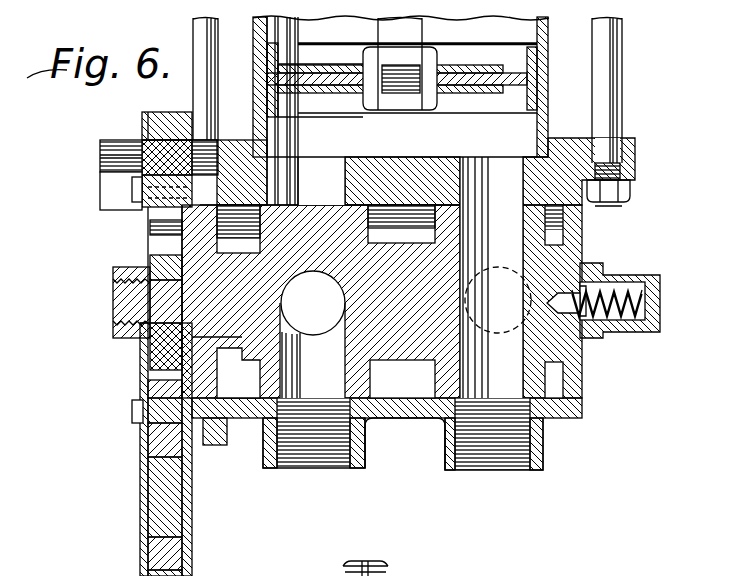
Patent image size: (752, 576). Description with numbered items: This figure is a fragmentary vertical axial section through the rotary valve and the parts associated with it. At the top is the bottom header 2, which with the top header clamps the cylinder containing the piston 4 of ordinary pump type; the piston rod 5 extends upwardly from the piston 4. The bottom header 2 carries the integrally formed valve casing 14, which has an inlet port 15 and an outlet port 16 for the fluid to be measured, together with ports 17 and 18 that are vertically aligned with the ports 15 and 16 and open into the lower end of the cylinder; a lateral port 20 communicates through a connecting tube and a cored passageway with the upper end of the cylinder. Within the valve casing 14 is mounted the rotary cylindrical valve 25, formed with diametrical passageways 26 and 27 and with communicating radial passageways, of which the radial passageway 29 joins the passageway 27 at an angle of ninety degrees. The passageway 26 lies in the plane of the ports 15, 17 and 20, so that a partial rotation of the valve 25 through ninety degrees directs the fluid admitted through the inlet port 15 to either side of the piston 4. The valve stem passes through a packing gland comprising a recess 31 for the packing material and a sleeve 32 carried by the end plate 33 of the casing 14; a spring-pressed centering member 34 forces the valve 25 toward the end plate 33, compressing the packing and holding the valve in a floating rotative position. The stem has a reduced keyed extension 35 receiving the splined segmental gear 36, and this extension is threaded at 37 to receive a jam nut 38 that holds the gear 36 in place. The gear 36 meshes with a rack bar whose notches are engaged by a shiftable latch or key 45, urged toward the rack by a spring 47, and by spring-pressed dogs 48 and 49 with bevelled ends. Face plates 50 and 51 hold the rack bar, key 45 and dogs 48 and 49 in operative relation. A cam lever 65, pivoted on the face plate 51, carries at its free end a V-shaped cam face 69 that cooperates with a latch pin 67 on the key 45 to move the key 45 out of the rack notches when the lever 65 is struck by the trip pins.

The bottom header 2 is at (362, 168).
The piston 4 is at (453, 93).
The piston rod 5 is at (426, 44).
The valve casing 14 is at (592, 412).
The inlet port 15 is at (543, 448).
The outlet port 16 is at (316, 463).
The port 17 is at (468, 189).
The port 18 is at (321, 181).
The lateral port 20 is at (550, 337).
The rotary cylindrical valve 25 is at (430, 348).
The diametrical passageway 26 is at (510, 372).
The diametrical passageway 27 is at (322, 325).
The radial passageway 29 is at (306, 365).
The recess 31 is at (238, 373).
The sleeve 32 is at (233, 337).
The end plate 33 is at (143, 393).
The spring-pressed centering member 34 is at (628, 285).
The reduced keyed extension 35 is at (113, 297).
The splined segmental gear 36 is at (150, 258).
The threads 37 is at (112, 297).
The jam nut 38 is at (113, 275).
The shiftable latch or key 45 is at (153, 148).
The spring 47 is at (170, 500).
The spring-pressed dog 48 is at (175, 555).
The spring-pressed dog 49 is at (182, 452).
The face plate 50 is at (140, 512).
The face plate 51 is at (137, 118).
The cam lever 65 is at (100, 200).
The latch pin 67 is at (107, 152).
The V-shaped cam face 69 is at (100, 175).